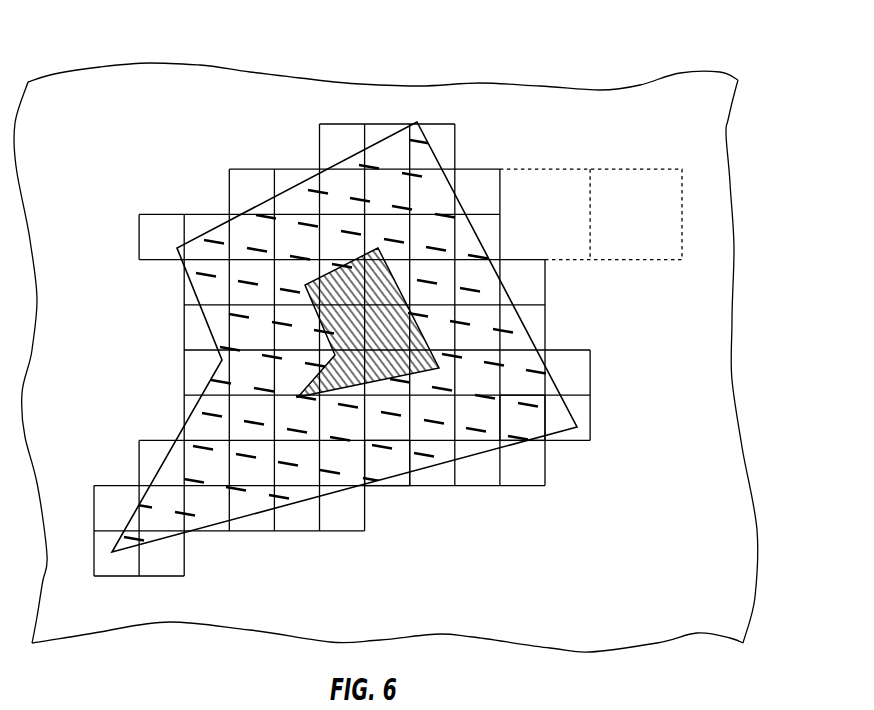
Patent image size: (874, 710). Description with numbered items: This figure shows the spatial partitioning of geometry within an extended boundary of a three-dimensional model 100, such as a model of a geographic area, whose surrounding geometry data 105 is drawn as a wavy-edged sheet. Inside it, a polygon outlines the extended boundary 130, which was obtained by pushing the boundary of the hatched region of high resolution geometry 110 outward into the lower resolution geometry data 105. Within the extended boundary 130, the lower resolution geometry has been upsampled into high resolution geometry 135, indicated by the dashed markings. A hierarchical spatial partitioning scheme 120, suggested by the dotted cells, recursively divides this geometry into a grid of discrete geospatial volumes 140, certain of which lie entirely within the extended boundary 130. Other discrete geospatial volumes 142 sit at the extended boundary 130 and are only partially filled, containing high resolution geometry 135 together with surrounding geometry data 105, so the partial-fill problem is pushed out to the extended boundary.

The three-dimensional model 100 is at (751, 120).
The geometry data 105 is at (680, 124).
The region of high resolution geometry 110 is at (297, 394).
The hierarchical spatial partitioning scheme 120 is at (548, 169).
The extended boundary 130 is at (525, 338).
The high resolution geometry 135 is at (390, 462).
The discrete geospatial volumes 140 is at (511, 437).
The discrete geospatial volumes at the boundary 142 is at (252, 190).